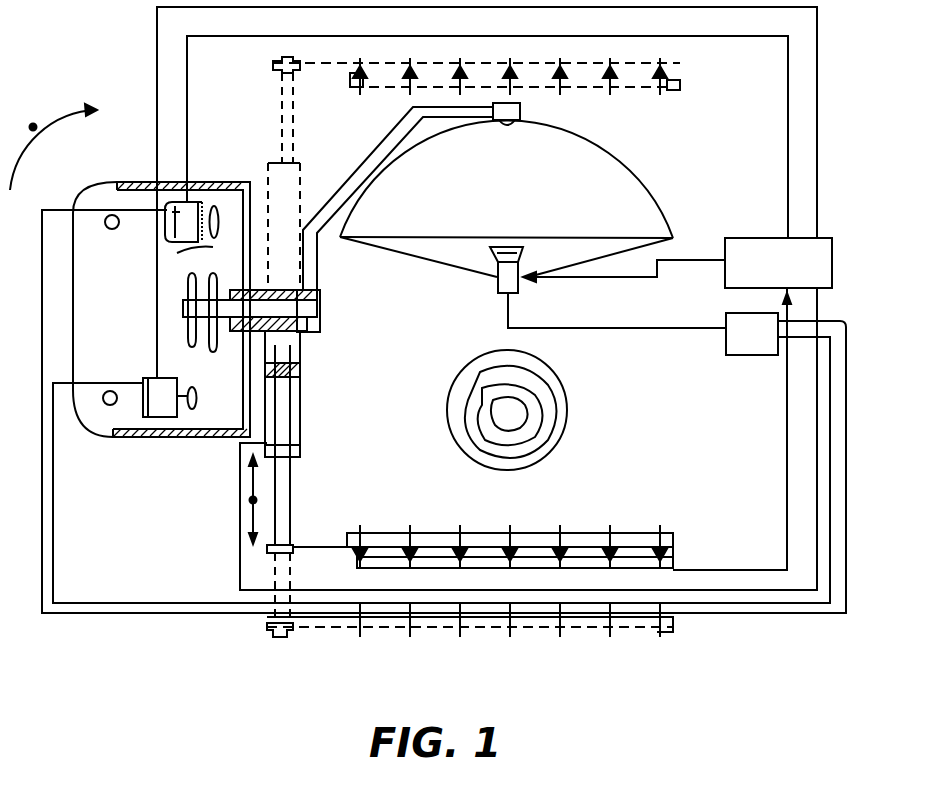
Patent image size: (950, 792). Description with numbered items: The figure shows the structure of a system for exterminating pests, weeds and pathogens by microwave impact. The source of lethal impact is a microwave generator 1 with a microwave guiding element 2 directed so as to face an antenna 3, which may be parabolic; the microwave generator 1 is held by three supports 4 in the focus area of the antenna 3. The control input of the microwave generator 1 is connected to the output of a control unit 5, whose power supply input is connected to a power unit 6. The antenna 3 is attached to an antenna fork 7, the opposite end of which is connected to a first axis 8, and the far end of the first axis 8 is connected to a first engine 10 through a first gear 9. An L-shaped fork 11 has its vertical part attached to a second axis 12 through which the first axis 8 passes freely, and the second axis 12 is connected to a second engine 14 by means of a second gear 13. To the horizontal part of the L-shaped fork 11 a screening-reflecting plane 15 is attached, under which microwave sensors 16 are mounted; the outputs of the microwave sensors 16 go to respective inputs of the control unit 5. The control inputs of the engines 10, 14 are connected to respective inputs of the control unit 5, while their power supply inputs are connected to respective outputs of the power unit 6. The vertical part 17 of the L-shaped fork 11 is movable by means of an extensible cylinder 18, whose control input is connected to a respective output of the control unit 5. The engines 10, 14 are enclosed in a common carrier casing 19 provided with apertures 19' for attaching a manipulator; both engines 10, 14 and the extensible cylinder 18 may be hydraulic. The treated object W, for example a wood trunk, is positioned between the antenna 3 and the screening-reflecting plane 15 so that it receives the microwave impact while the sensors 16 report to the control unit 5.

The microwave generator 1 is at (503, 285).
The microwave guiding element 2 is at (493, 255).
The antenna 3 is at (490, 212).
The supports 4 is at (397, 251).
The control unit 5 is at (778, 263).
The power unit 6 is at (752, 334).
The antenna fork 7 is at (515, 124).
The first axis 8 is at (303, 332).
The first gear 9 is at (192, 377).
The first engine 10 is at (153, 383).
The L-shaped fork 11 is at (288, 543).
The second axis 12 is at (282, 263).
The second gear 13 is at (177, 260).
The second engine 14 is at (167, 233).
The screening-reflecting plane 15 is at (570, 538).
The microwave sensors 16 is at (617, 548).
The vertical part of the L-shaped fork 17 is at (290, 487).
The extensible cylinder 18 is at (298, 447).
The common carrier casing 19 is at (161, 285).
The apertures 19' is at (97, 304).
The treated object W is at (555, 383).